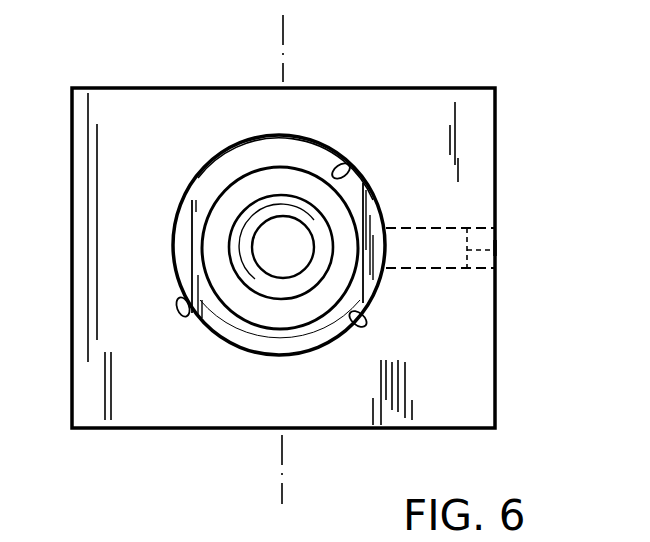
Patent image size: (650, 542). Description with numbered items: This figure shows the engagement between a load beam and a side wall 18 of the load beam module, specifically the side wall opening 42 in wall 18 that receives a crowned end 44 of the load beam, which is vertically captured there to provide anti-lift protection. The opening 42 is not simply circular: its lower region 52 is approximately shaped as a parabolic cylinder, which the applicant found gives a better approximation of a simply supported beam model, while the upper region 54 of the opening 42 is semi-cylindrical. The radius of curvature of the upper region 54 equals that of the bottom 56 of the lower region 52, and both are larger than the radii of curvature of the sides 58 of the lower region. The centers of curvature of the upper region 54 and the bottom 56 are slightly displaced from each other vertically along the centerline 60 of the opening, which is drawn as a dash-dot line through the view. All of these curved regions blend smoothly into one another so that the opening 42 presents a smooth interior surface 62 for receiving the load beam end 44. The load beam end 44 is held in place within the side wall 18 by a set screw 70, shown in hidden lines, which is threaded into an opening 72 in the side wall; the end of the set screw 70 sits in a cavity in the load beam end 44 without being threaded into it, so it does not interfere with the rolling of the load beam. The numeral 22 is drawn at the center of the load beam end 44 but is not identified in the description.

The side wall 18 is at (86, 88).
The shaft 22 is at (297, 262).
The opening 42 is at (284, 136).
The load beam end 44 is at (198, 203).
The lower region 52 is at (337, 342).
The upper region 54 is at (337, 152).
The bottom 56 is at (280, 356).
The sides 58 is at (176, 304).
The centerline 60 is at (284, 34).
The interior surface 62 is at (352, 182).
The set screw 70 is at (497, 254).
The opening 72 is at (497, 235).